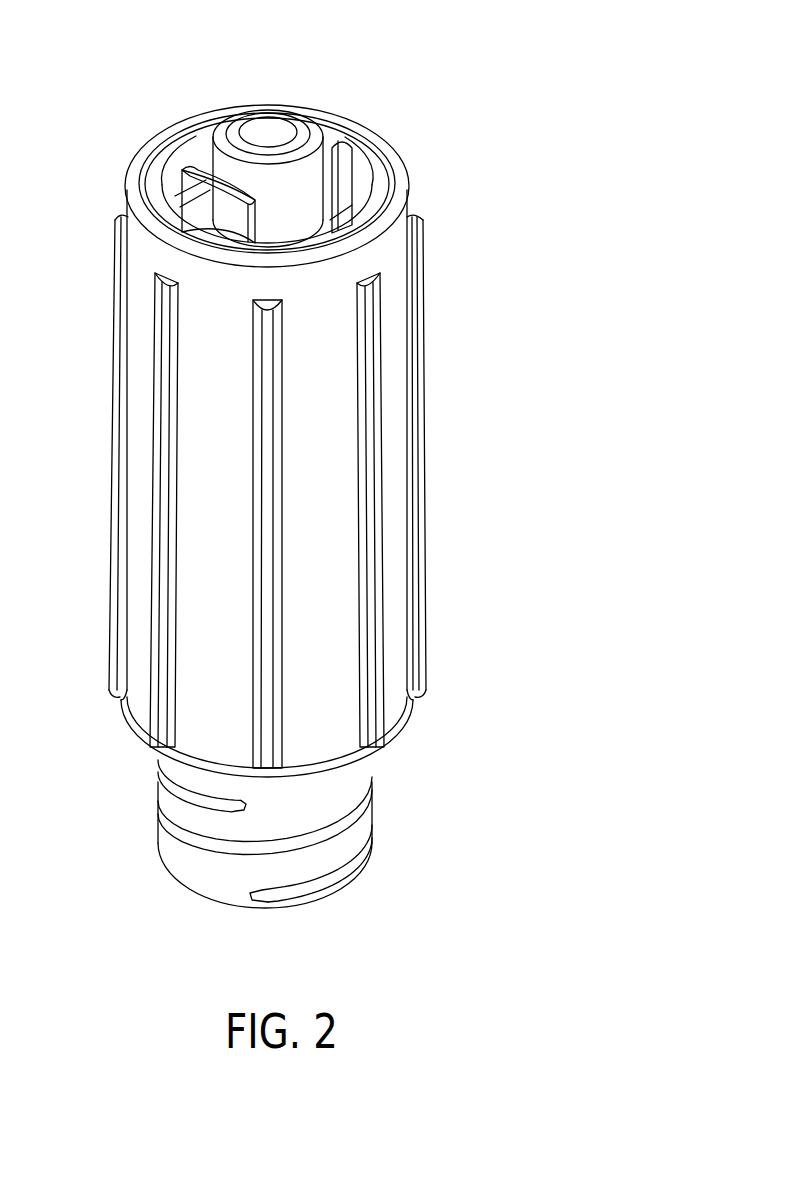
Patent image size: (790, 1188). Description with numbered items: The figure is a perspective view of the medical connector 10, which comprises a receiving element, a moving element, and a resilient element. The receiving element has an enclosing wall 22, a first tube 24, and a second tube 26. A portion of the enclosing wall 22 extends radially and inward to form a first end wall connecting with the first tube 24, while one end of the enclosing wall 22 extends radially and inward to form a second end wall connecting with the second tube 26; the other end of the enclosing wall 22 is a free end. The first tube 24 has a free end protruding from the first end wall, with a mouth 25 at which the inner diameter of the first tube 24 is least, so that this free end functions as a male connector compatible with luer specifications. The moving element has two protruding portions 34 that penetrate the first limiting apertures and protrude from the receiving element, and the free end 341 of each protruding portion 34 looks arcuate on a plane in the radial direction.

The medical connector 10 is at (435, 93).
The enclosing wall 22 is at (394, 501).
The first tube 24 is at (303, 197).
The mouth 25 is at (267, 135).
The protruding portion 34 is at (333, 147).
The free end 341 is at (170, 174).
The second tube 26 is at (312, 792).